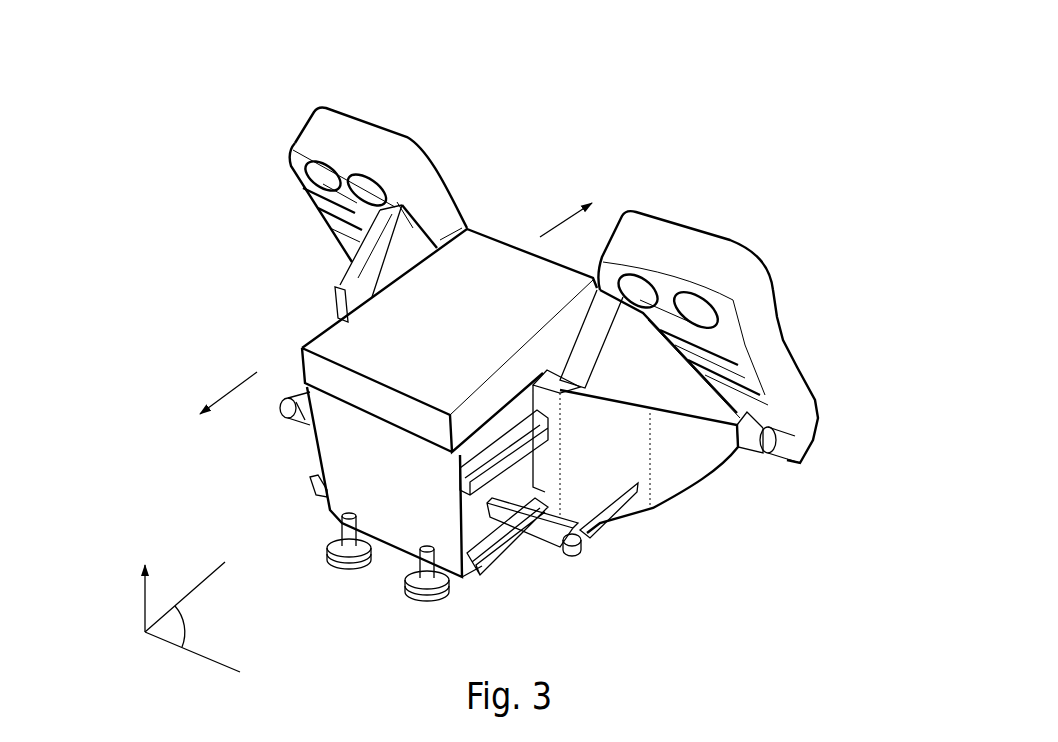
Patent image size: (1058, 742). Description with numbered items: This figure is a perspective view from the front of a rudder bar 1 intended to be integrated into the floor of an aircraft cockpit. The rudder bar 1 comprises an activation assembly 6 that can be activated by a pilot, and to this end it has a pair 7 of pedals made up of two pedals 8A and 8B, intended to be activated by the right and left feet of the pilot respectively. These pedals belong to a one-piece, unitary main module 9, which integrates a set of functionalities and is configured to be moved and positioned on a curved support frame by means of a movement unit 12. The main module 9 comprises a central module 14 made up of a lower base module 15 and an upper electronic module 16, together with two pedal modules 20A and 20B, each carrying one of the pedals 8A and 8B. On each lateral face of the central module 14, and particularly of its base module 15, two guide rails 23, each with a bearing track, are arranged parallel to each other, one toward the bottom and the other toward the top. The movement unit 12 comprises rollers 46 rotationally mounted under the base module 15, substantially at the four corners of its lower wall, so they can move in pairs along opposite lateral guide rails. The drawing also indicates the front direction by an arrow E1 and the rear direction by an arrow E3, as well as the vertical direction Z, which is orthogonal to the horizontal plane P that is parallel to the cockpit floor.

The rudder bar 1 is at (493, 338).
The activation assembly 6 is at (377, 395).
The pair of pedals 7 is at (548, 235).
The pedal 8A is at (378, 128).
The pedal 8B is at (785, 346).
The main module 9 is at (296, 330).
The movement unit 12 is at (340, 573).
The central module 14 is at (470, 212).
The base module 15 is at (388, 552).
The electronic module 16 is at (567, 243).
The pedal module 20A is at (378, 165).
The pedal module 20B is at (726, 298).
The guide rail 23 is at (490, 565).
The roller 46 is at (418, 588).
The arrow indicating front direction E1 is at (240, 395).
The arrow indicating rear direction E3 is at (550, 217).
The vertical direction Z is at (142, 598).
The horizontal plane P is at (193, 626).